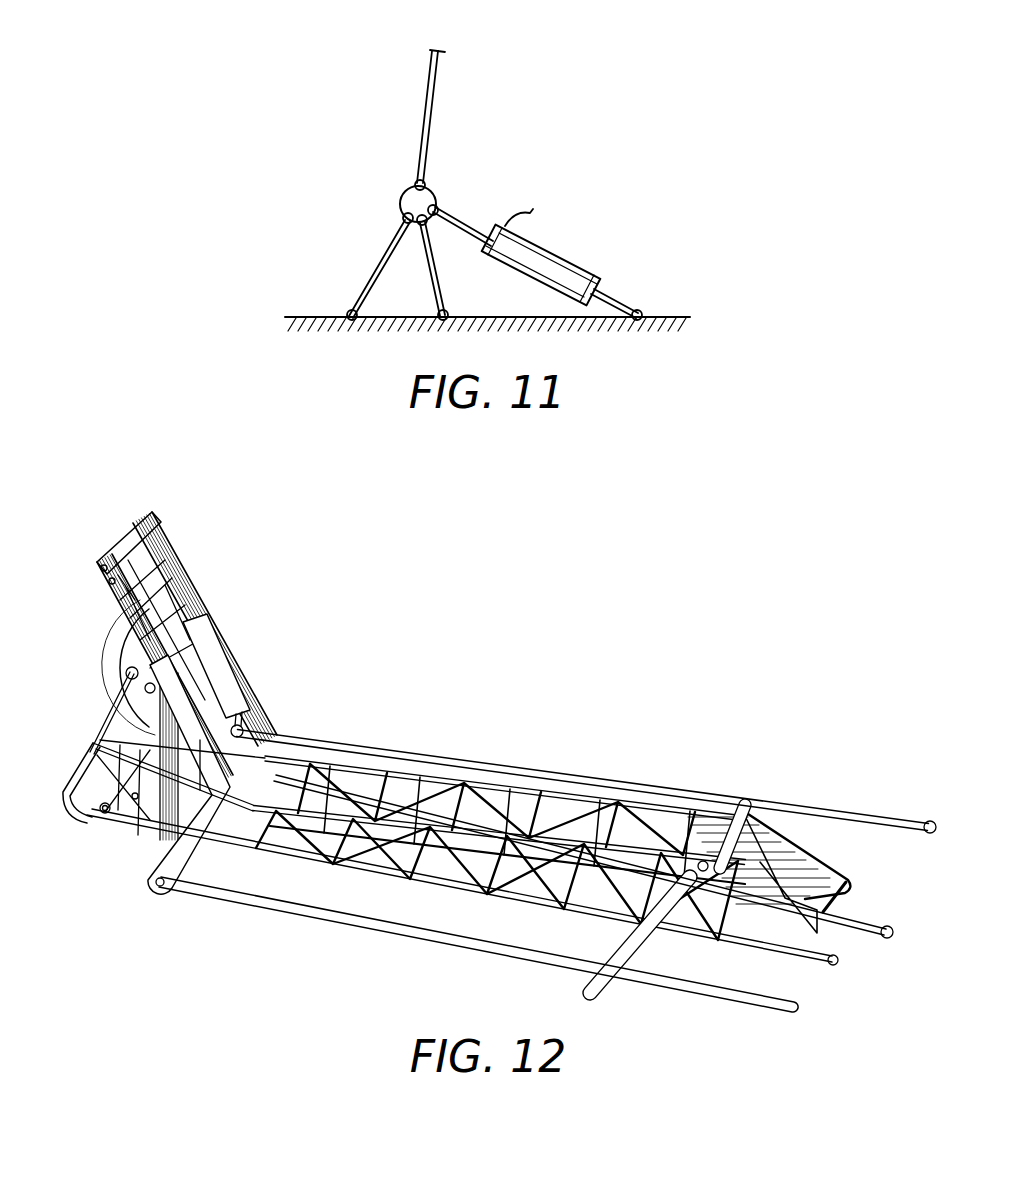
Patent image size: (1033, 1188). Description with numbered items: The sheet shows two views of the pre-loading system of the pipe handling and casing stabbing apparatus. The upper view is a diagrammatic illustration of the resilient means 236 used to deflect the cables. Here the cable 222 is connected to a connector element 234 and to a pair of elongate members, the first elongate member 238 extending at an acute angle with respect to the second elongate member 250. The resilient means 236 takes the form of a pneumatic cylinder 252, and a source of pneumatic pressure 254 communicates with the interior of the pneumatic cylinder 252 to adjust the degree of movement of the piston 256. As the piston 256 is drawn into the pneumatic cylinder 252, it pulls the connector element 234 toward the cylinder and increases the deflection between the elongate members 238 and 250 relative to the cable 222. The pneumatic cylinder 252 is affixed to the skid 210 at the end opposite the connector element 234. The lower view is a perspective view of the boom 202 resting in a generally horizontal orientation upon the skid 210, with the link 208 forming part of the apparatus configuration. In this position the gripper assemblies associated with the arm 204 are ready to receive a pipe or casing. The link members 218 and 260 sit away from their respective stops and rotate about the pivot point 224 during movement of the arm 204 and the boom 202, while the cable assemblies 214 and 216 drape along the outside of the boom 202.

In FIG. 11, the cable 222 is at (438, 100).
In FIG. 11, the connector element 234 is at (403, 194).
In FIG. 11, the first elongate member 238 is at (378, 266).
In FIG. 11, the second elongate member 250 is at (438, 275).
In FIG. 11, the piston 256 is at (458, 211).
In FIG. 11, the source of pneumatic pressure 254 is at (534, 218).
In FIG. 11, the pneumatic cylinder 252 is at (545, 246).
In FIG. 11, the resilient means 236 is at (597, 268).
In FIG. 11, the skid 210 is at (667, 316).
In FIG. 12, the arm 204 is at (120, 634).
In FIG. 12, the pivot point 224 is at (127, 673).
In FIG. 12, the link member 218 is at (200, 727).
In FIG. 12, the link member 260 is at (222, 700).
In FIG. 12, the cable assembly 214 is at (340, 783).
In FIG. 12, the cable assembly 216 is at (537, 768).
In FIG. 12, the boom 202 is at (605, 918).
In FIG. 12, the link 208 is at (423, 936).